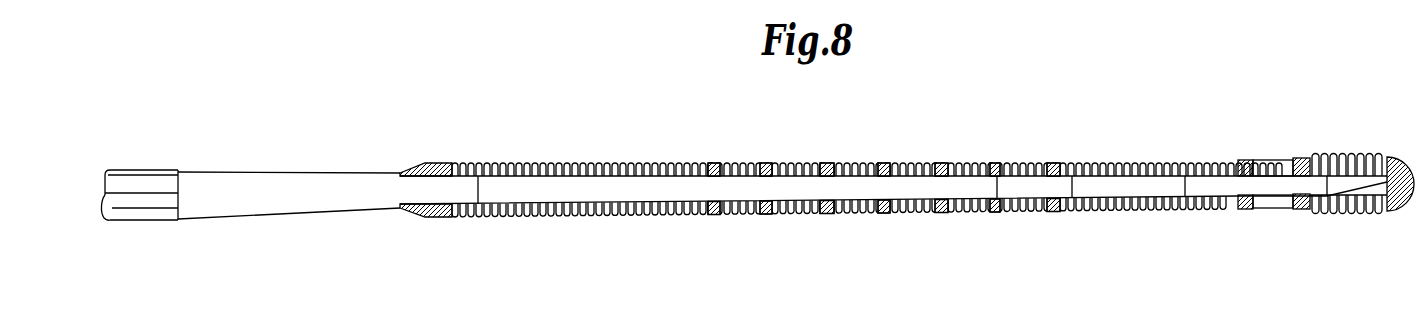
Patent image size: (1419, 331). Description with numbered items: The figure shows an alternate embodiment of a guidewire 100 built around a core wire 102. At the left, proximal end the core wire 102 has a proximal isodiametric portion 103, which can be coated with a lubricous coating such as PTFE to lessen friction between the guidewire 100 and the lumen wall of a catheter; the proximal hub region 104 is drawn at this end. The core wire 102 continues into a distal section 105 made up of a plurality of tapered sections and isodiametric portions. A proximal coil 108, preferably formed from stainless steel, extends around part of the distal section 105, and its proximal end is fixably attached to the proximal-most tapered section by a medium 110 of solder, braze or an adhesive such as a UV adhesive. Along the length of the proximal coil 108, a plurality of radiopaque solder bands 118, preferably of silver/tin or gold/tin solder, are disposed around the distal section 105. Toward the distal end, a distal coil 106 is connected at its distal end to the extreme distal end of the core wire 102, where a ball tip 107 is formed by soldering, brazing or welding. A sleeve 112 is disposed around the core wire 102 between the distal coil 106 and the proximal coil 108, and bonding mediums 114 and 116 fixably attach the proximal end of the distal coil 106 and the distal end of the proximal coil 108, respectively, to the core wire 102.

The guidewire 100 is at (419, 156).
The core wire 102 is at (268, 186).
The proximal isodiametric portion 103 is at (165, 214).
The proximal handle/hub 104 is at (152, 173).
The distal section 105 is at (328, 204).
The distal coil 106 is at (1351, 212).
The ball tip 107 is at (1400, 208).
The proximal coil 108 is at (1118, 162).
The medium 110 is at (440, 218).
The sleeve 112 is at (1262, 160).
The bonding medium 114 is at (1301, 158).
The bonding medium 116 is at (1244, 211).
The radiopaque solder bands 118 is at (715, 164).